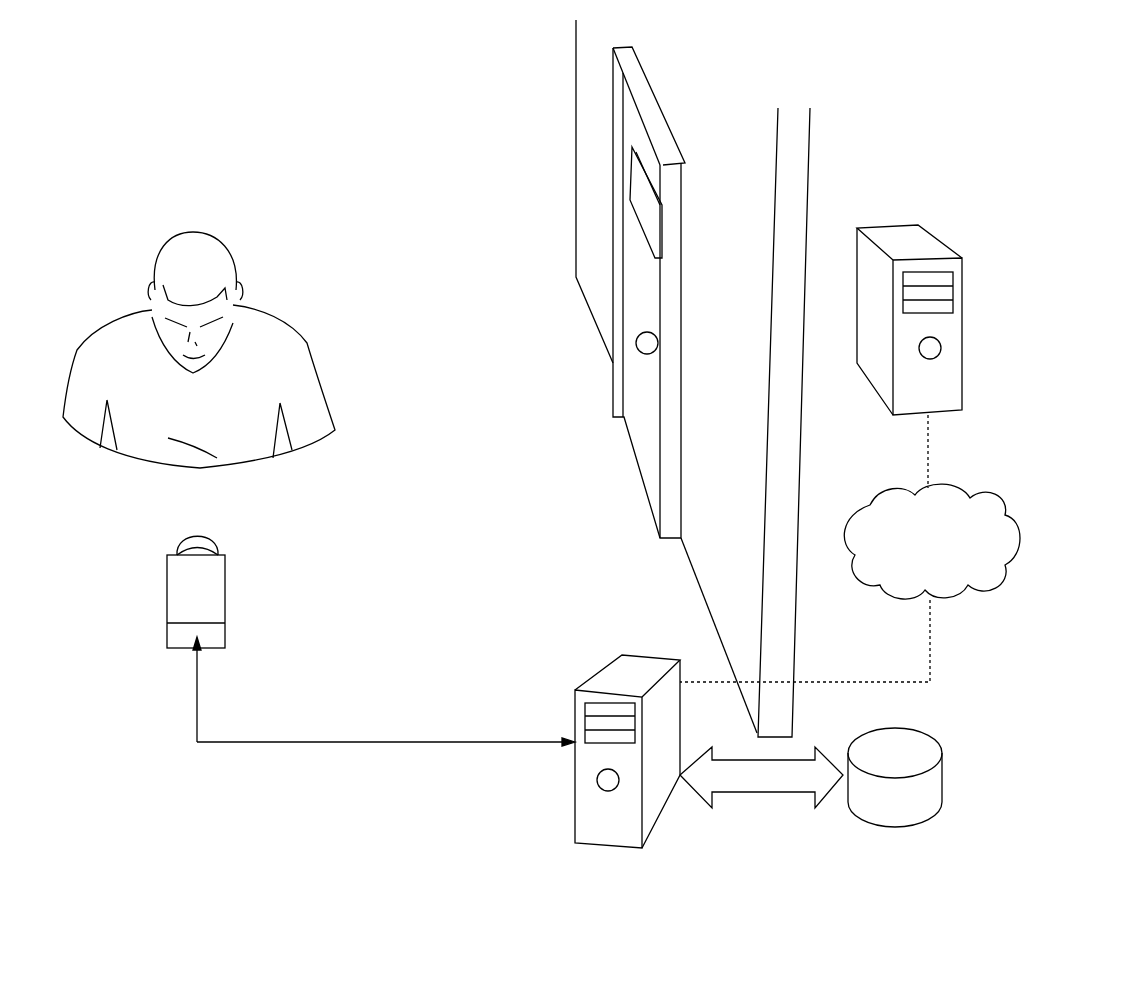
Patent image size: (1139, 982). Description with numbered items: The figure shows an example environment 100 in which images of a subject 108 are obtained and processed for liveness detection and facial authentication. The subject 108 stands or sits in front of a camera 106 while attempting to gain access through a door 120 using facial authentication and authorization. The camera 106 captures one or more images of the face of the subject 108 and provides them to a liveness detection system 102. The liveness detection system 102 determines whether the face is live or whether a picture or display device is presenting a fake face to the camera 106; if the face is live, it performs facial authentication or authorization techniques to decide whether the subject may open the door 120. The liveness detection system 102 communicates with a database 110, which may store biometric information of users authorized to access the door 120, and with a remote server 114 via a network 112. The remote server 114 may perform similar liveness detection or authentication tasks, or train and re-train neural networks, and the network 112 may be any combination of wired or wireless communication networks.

The environment 100 is at (988, 70).
The liveness detection system 102 is at (657, 820).
The camera 106 is at (167, 612).
The subject 108 is at (217, 225).
The database 110 is at (895, 777).
The network 112 is at (982, 585).
The remote server 114 is at (962, 308).
The door 120 is at (630, 102).